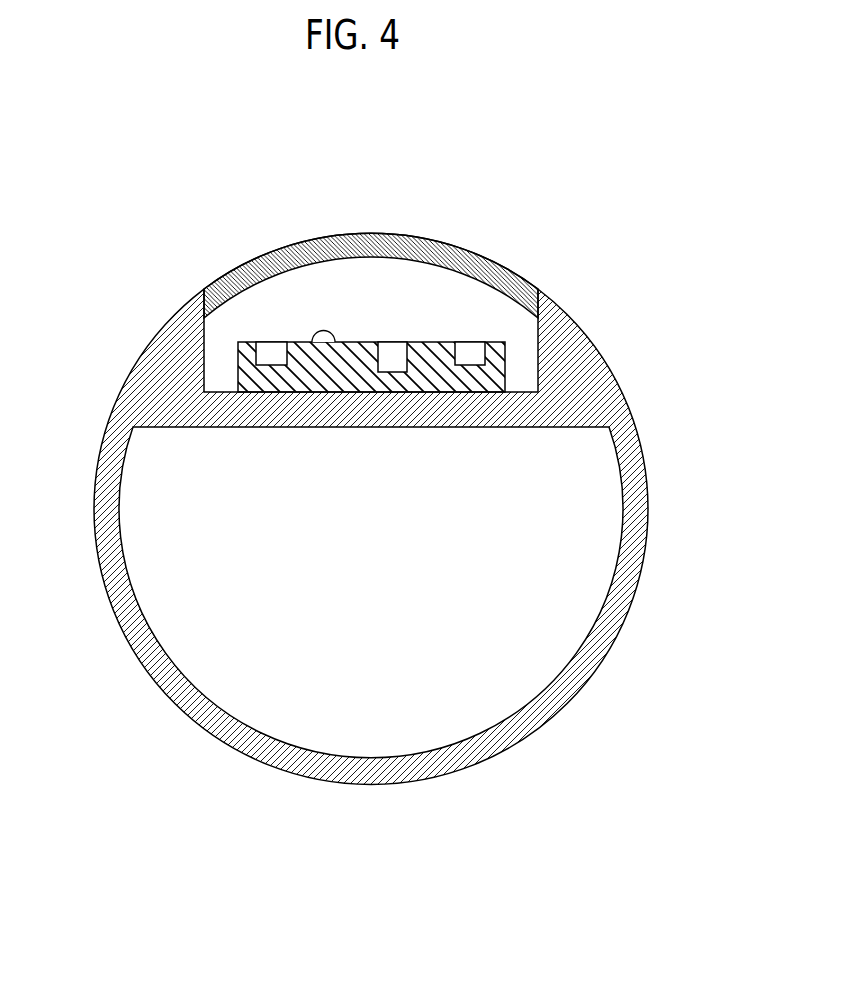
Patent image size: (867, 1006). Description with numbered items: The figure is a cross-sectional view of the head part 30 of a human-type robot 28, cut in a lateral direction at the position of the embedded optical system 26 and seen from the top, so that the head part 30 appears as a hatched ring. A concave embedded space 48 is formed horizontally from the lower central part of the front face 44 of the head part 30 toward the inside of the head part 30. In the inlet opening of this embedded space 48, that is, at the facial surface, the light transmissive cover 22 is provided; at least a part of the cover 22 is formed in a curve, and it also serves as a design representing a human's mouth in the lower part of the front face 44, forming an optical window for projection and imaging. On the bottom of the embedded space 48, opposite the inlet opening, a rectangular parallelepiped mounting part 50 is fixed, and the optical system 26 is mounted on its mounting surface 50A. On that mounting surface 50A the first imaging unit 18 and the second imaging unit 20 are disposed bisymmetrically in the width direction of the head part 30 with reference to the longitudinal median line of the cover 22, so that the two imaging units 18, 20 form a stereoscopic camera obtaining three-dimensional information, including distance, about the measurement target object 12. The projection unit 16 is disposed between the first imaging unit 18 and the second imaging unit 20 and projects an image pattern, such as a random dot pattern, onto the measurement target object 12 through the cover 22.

The measurement target object 12 is at (401, 539).
The head part 30 is at (653, 481).
The human-type robot 28 is at (359, 288).
The front face 44 is at (407, 251).
The cover 22 is at (512, 273).
The rectangular parallelepiped mounting part 50 is at (233, 366).
The mounting surface 50A is at (333, 333).
The embedded space 48 is at (518, 357).
The optical system 26 is at (311, 234).
The first imaging unit 18 is at (271, 353).
The projection unit 16 is at (395, 353).
The second imaging unit 20 is at (470, 353).